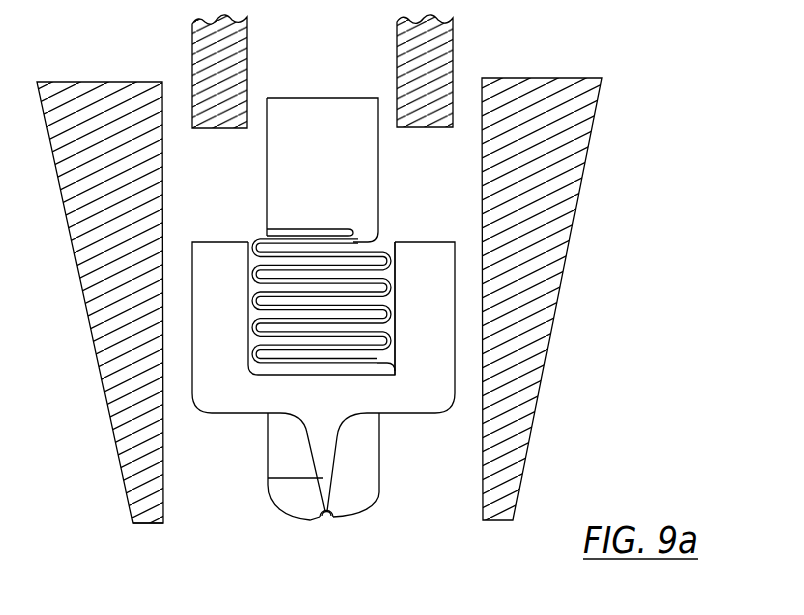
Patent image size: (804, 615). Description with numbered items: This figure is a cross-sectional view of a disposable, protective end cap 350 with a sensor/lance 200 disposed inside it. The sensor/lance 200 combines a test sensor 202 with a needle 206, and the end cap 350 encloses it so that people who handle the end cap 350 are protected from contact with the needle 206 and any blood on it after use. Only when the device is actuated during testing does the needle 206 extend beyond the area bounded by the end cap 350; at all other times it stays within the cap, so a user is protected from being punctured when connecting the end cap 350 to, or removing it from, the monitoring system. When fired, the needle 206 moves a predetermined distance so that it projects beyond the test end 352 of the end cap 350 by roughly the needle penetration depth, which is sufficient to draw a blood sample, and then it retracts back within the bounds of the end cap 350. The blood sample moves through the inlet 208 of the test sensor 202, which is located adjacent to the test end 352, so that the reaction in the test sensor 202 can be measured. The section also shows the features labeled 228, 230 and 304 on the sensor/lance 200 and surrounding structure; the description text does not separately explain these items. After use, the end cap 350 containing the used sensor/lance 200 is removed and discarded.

The sensor/lance 200 is at (399, 309).
The test sensor 202 is at (367, 490).
The needle 206 is at (268, 478).
The inlet 208 is at (330, 526).
The spring / housing left wall 228 is at (212, 257).
The housing right wall 230 is at (407, 256).
The support pillars 304 is at (397, 58).
The end cap 350 is at (97, 305).
The test end 352 is at (200, 513).